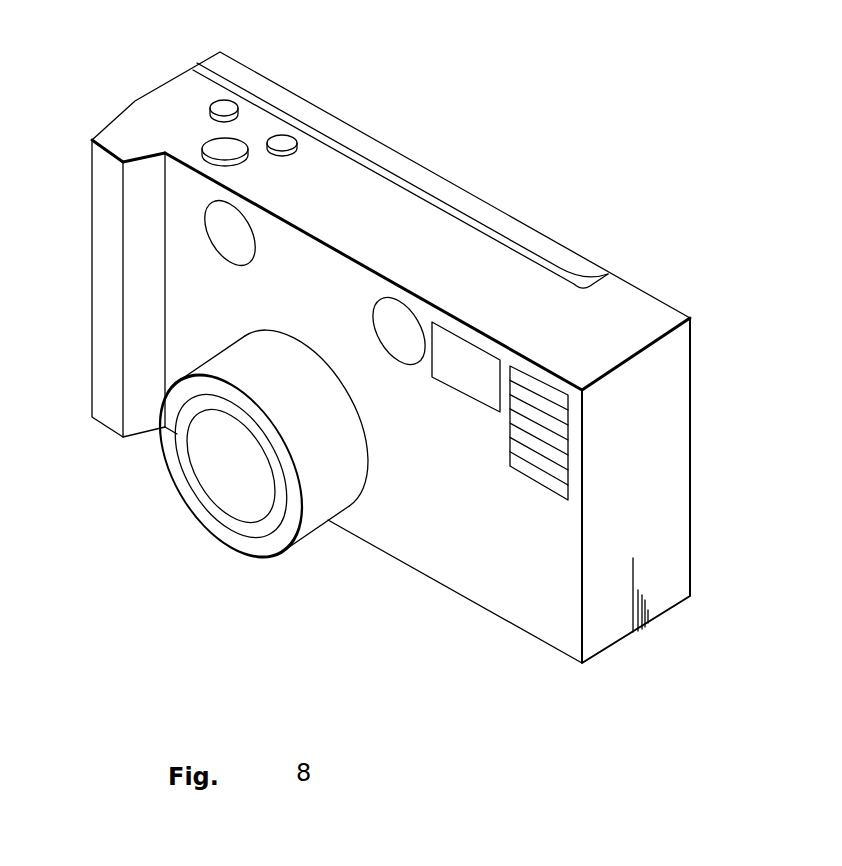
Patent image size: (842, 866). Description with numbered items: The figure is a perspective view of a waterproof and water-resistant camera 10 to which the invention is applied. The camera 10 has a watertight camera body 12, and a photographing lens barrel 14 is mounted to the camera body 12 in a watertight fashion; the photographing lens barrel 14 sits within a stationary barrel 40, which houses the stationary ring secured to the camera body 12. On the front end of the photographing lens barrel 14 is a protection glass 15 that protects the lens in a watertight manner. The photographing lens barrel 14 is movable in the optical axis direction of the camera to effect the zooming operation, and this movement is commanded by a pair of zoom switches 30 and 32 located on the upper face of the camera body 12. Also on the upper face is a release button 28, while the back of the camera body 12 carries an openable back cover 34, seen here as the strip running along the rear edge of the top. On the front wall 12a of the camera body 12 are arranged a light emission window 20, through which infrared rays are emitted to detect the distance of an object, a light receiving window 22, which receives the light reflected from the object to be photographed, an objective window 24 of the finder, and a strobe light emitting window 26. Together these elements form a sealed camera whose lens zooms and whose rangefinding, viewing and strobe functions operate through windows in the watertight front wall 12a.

The camera 10 is at (423, 118).
The camera body 12 is at (603, 313).
The front wall 12a is at (402, 545).
The photographing lens barrel 14 is at (248, 527).
The protection glass 15 is at (217, 480).
The light emission window 20 is at (217, 233).
The light receiving window 22 is at (403, 325).
The objective window 24 is at (472, 360).
The strobe light emitting window 26 is at (553, 397).
The release button 28 is at (212, 143).
The zoom switch 30 is at (230, 102).
The zoom switch 32 is at (288, 140).
The back cover 34 is at (358, 137).
The stationary barrel 40 is at (313, 512).